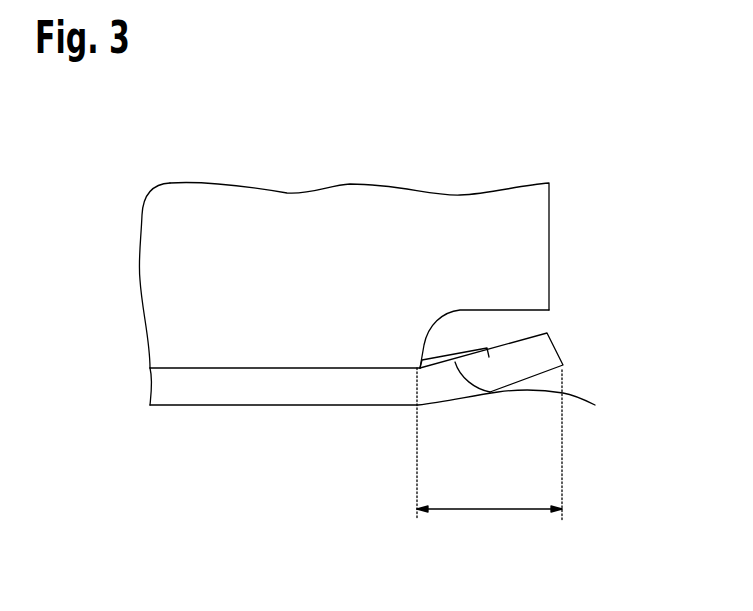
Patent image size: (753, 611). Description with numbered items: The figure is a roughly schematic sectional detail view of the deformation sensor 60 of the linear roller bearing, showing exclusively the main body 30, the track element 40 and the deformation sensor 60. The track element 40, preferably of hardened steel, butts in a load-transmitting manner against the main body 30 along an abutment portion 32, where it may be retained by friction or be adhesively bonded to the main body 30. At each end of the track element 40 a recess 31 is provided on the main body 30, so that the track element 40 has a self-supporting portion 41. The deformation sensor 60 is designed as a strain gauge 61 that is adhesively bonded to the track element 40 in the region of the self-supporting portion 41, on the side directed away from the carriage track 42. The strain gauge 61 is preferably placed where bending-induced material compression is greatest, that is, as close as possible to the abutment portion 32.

The main body 30 is at (287, 208).
The recess 31 is at (507, 311).
The abutment portion 32 is at (210, 368).
The track element 40 is at (262, 392).
The self-supporting portion 41 is at (488, 510).
The carriage track 42 is at (345, 405).
The deformation sensor 60 is at (548, 380).
The strain gauge 61 is at (454, 358).